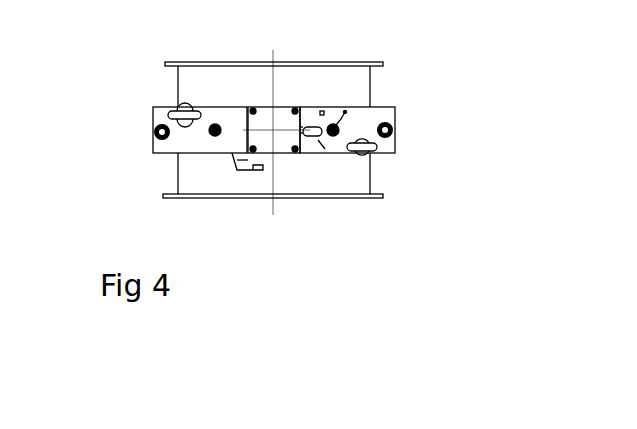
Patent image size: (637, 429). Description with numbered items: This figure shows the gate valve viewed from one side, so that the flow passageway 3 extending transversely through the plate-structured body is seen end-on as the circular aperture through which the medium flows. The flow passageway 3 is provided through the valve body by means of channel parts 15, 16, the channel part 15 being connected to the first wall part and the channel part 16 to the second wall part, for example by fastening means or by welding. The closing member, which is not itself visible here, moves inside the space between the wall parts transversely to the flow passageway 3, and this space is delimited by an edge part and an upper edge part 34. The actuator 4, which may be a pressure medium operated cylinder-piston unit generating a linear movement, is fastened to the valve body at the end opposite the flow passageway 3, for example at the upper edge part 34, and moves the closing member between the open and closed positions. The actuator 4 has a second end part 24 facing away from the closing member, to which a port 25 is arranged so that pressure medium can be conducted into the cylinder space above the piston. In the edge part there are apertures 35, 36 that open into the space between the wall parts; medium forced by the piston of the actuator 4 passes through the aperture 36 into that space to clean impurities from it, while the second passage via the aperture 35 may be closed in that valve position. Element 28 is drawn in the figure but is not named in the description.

The flow passageway 3 is at (288, 231).
The actuator 4 is at (296, 121).
The channel part 15 is at (368, 184).
The channel part 16 is at (203, 73).
The second end part 24 is at (283, 112).
The port 25 is at (320, 140).
The mounting ring 28 is at (155, 132).
The upper edge part 34 is at (162, 146).
The aperture 35 is at (395, 110).
The aperture 36 is at (211, 133).